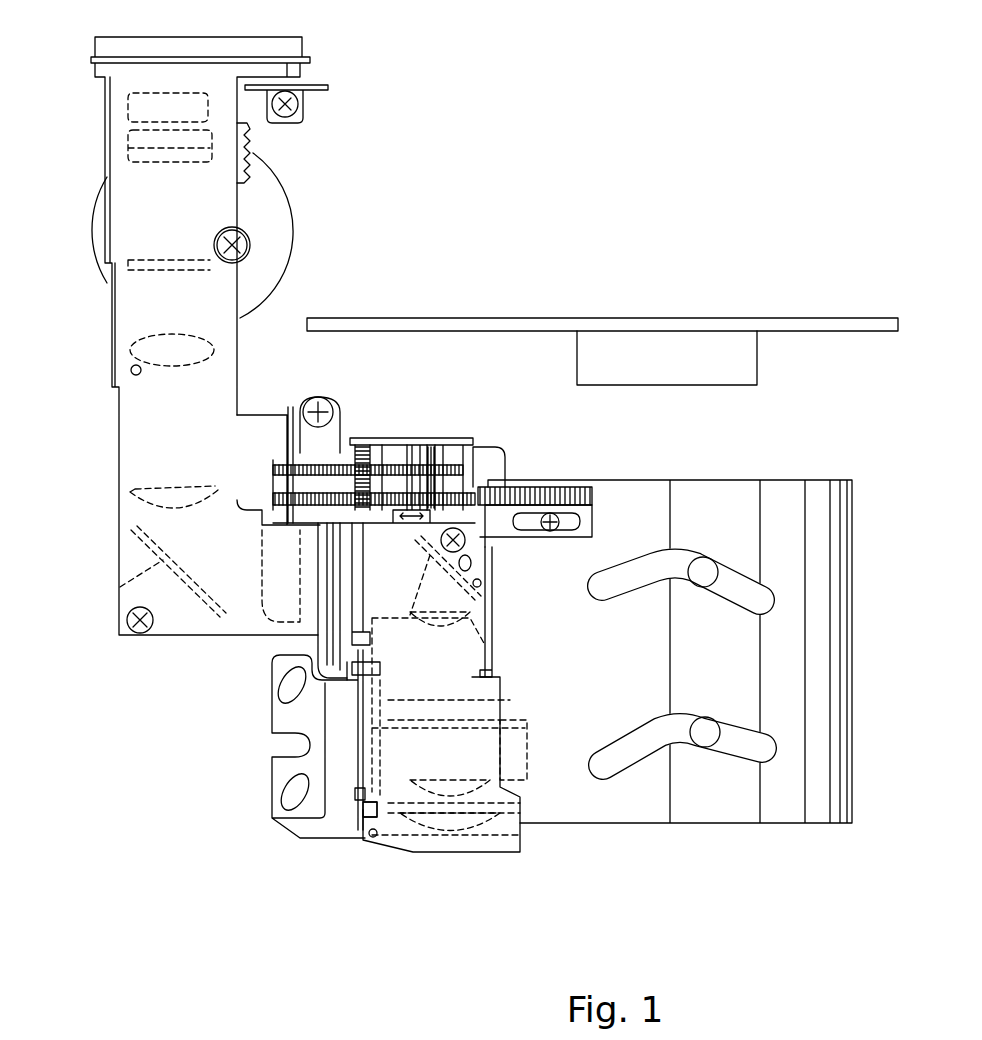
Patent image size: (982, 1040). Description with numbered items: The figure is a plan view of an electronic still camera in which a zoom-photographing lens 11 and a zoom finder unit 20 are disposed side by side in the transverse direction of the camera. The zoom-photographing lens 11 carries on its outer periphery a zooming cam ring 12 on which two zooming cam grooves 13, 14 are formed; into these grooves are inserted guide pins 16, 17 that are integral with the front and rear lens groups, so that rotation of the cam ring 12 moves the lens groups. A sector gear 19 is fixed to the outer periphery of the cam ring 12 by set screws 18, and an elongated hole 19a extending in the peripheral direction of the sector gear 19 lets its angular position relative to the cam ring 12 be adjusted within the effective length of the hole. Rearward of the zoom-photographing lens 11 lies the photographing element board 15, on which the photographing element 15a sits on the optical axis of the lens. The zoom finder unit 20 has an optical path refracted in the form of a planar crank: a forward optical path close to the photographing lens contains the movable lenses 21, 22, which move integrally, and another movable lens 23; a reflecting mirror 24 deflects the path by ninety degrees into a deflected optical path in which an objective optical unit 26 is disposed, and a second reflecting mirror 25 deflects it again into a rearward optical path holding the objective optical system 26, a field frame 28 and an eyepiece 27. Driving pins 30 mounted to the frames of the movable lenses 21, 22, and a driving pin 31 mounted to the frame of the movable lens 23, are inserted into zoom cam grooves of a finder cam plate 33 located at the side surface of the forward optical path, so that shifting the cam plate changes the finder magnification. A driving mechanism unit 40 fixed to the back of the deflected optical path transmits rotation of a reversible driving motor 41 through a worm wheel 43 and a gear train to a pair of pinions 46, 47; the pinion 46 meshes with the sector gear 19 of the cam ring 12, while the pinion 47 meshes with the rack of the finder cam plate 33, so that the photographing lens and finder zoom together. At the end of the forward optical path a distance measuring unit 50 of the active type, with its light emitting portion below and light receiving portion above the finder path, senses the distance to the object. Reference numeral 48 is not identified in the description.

The zoom-photographing lens 11 is at (755, 844).
The zooming cam ring 12 is at (825, 690).
The zooming cam groove 13 is at (638, 742).
The zooming cam groove 14 is at (645, 565).
The photographing element board 15 is at (800, 322).
The photographing element 15a is at (752, 375).
The guide pin 16 is at (705, 744).
The guide pin 17 is at (703, 582).
The set screw 18 is at (552, 530).
The sector gear 19 is at (572, 487).
The elongated hole 19a is at (530, 525).
The zoom finder unit 20 is at (404, 878).
The movable lens 21 is at (488, 852).
The movable lens 22 is at (492, 648).
The movable lens 23 is at (520, 805).
The reflecting mirror 24 is at (410, 618).
The reflecting mirror 25 is at (122, 585).
The objective optical unit 26 is at (128, 350).
The eyepiece 27 is at (110, 125).
The field frame 28 is at (108, 275).
The driving pin 30 is at (360, 812).
The driving pin 31 is at (343, 673).
The finder cam plate 33 is at (357, 790).
The driving mechanism unit 40 is at (265, 371).
The reversible driving motor 41 is at (253, 460).
The worm wheel 43 is at (395, 440).
The pinion 46 is at (470, 477).
The pinion 47 is at (348, 470).
The rods 48 is at (330, 520).
The distance measuring unit 50 is at (272, 785).